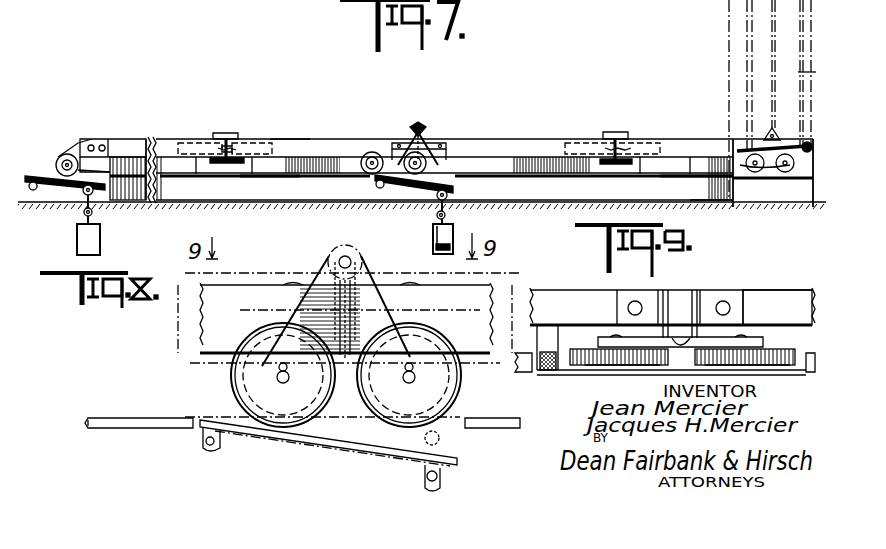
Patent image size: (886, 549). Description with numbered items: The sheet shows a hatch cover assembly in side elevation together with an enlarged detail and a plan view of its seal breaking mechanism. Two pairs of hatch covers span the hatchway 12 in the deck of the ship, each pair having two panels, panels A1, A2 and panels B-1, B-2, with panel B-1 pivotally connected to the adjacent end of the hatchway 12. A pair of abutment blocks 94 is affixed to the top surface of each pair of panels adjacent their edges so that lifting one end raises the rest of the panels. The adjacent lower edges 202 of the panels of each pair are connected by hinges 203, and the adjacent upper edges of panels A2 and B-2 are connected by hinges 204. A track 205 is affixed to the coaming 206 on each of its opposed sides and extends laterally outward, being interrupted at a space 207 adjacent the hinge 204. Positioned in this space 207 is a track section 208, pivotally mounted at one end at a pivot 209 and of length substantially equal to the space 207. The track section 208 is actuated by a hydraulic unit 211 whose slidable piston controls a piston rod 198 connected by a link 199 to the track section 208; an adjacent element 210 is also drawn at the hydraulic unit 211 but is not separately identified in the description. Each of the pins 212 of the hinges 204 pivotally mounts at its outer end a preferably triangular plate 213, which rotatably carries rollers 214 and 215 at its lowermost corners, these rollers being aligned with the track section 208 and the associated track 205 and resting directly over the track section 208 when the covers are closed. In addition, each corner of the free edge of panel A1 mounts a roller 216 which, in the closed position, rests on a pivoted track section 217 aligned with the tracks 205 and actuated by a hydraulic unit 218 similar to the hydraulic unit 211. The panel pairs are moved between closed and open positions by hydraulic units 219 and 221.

In FIG. 7, the hatchway 12 is at (709, 204).
In FIG. 7, the abutment blocks 94 is at (225, 134).
In FIG. 7, the piston rod 198 is at (455, 230).
In FIG. 7, the link 199 is at (436, 207).
In FIG. 7, the lower edges 202 is at (200, 160).
In FIG. 7, the hinges 203 is at (226, 163).
In FIG. 7, the hinges 204 is at (437, 143).
In FIG. 7, the track 205 is at (299, 176).
In FIG. 8, the track 205 is at (118, 438).
In FIG. 9, the track 205 is at (524, 374).
In FIG. 7, the coaming 206 is at (693, 165).
In FIG. 7, the space 207 is at (452, 177).
In FIG. 8, the track section 208 is at (320, 448).
In FIG. 9, the track section 208 is at (600, 378).
In FIG. 8, the pivot 209 is at (206, 452).
In FIG. 7, the stop 210 is at (433, 252).
In FIG. 7, the hydraulic unit 211 is at (432, 246).
In FIG. 7, the pins 212 is at (419, 132).
In FIG. 8, the pins 212 is at (328, 262).
In FIG. 9, the pins 212 is at (700, 345).
In FIG. 8, the plate 213 is at (300, 302).
In FIG. 8, the roller 214 is at (242, 382).
In FIG. 9, the roller 214 is at (583, 345).
In FIG. 8, the roller 215 is at (452, 388).
In FIG. 9, the roller 215 is at (780, 350).
In FIG. 7, the roller 216 is at (66, 152).
In FIG. 7, the pivoted track section 217 is at (44, 176).
In FIG. 7, the hydraulic unit 218 is at (76, 240).
In FIG. 7, the hydraulic unit 219 is at (190, 141).
In FIG. 7, the hydraulic unit 221 is at (250, 141).
In FIG. 7, the panel A1 is at (128, 139).
In FIG. 7, the panel A2 is at (288, 140).
In FIG. 7, the panel B-1 is at (665, 143).
In FIG. 7, the panel B-2 is at (592, 129).